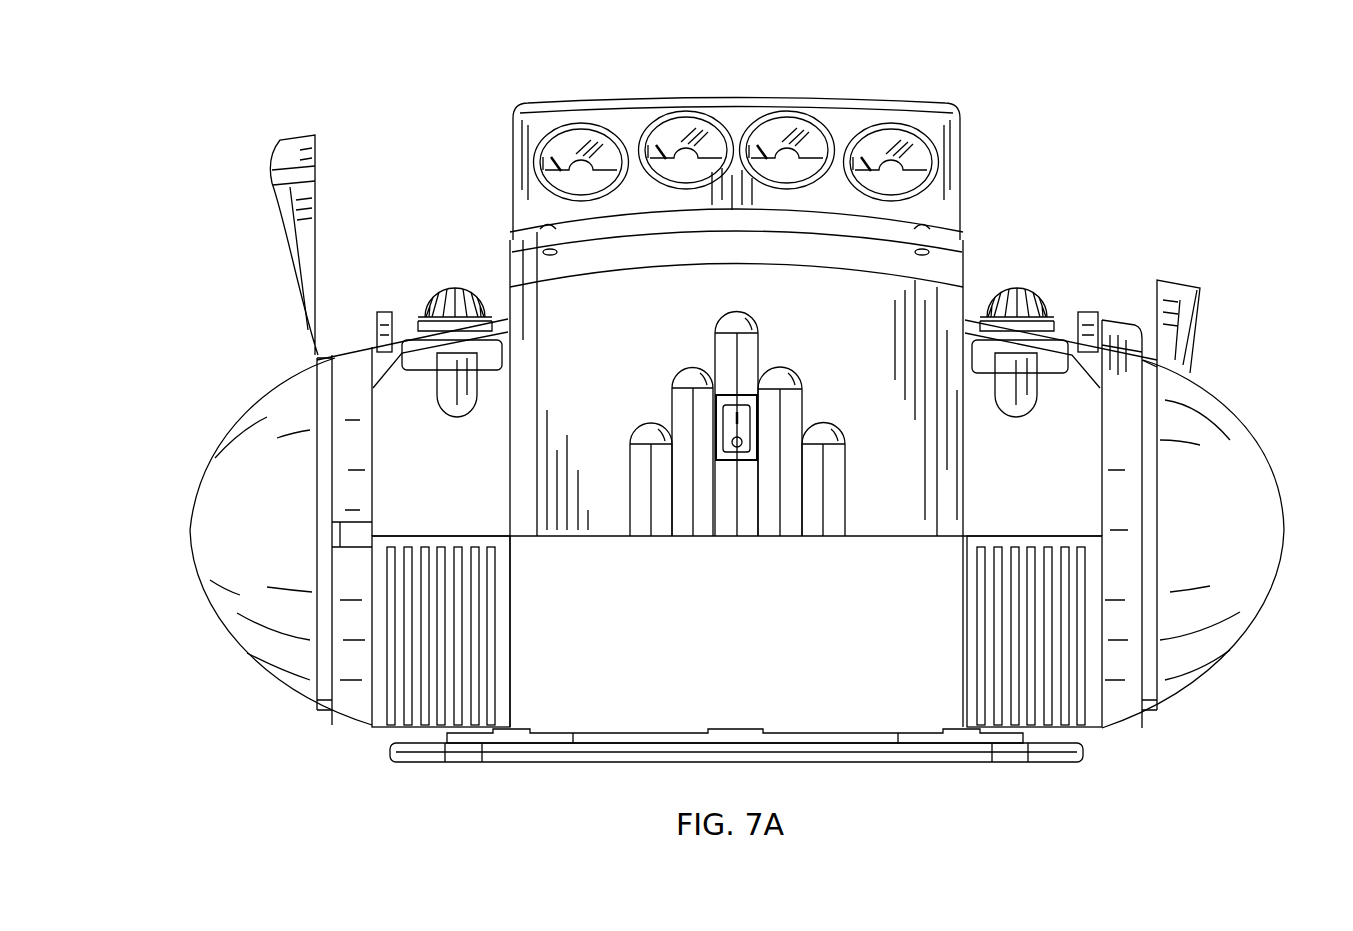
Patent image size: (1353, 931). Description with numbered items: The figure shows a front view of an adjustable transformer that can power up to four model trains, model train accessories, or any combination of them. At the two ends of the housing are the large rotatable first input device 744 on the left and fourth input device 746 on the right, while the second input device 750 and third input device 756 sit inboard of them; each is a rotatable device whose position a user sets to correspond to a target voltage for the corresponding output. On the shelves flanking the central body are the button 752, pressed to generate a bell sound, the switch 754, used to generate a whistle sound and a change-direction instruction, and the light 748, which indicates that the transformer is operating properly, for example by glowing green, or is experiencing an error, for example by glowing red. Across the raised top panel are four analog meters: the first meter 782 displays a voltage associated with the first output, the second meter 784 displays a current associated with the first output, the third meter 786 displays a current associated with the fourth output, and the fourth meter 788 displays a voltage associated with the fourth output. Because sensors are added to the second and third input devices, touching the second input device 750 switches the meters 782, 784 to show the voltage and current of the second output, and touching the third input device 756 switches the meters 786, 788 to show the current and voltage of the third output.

The first input device 744 is at (227, 503).
The fourth input device 746 is at (1268, 500).
The light 748 is at (463, 287).
The second input device 750 is at (343, 418).
The button 752 is at (457, 405).
The switch 754 is at (385, 310).
The third input device 756 is at (1125, 435).
The analog meter 782 is at (580, 122).
The analog meter 784 is at (667, 115).
The analog meter 786 is at (768, 115).
The analog meter 788 is at (870, 120).